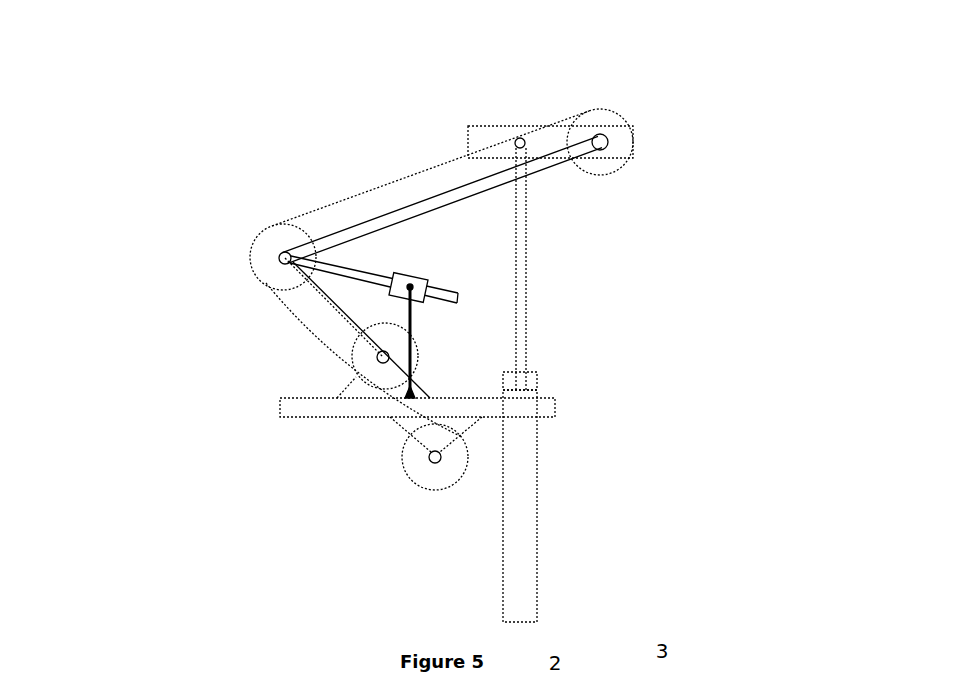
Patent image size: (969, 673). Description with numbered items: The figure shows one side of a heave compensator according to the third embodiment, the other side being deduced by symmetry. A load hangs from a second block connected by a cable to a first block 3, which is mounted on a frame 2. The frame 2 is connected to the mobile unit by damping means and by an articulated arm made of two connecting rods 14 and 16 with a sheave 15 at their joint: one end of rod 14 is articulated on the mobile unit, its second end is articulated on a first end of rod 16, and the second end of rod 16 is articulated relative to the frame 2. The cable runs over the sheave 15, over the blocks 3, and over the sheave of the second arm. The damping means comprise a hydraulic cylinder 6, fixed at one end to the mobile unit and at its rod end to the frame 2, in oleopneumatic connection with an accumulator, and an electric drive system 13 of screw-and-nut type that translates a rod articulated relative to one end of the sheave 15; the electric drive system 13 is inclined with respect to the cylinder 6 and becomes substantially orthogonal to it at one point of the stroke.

The frame 2 is at (547, 132).
The first block 3 is at (607, 122).
The hydraulic cylinder 6 is at (515, 507).
The electric drive system 13 is at (427, 280).
The connecting rod 14 is at (343, 310).
The sheave 15 is at (275, 238).
The connecting rod 16 is at (423, 202).